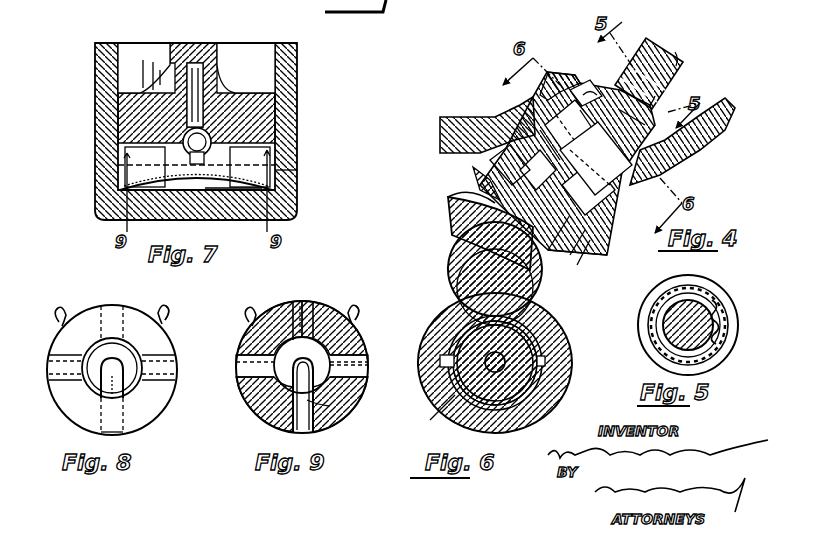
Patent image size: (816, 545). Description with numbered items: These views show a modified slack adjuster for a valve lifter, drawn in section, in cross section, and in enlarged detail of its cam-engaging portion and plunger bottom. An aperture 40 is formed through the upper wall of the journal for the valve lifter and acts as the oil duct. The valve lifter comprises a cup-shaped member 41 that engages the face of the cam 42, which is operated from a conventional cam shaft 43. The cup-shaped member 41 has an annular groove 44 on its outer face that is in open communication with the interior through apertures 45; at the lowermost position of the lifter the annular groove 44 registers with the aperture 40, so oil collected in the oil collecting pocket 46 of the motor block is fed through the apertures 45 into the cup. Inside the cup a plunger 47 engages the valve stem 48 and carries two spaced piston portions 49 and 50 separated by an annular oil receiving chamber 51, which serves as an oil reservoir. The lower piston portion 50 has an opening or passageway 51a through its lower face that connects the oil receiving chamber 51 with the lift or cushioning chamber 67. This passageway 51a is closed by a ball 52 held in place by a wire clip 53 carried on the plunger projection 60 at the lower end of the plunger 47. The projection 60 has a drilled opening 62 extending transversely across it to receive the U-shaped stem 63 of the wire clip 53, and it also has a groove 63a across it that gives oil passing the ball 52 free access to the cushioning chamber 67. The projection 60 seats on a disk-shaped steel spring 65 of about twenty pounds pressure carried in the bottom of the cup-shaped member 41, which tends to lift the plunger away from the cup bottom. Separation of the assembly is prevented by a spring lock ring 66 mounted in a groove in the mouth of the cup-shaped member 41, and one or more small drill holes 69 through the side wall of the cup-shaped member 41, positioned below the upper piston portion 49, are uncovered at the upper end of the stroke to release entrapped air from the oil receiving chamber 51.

In FIG. 4, the aperture 40 is at (523, 62).
In FIG. 6, the aperture 40 is at (444, 357).
In FIG. 7, the cup-shaped member 41 is at (96, 176).
In FIG. 4, the cup-shaped member 41 is at (553, 252).
In FIG. 6, the cup-shaped member 41 is at (460, 318).
In FIG. 5, the cup-shaped member 41 is at (732, 338).
In FIG. 4, the cam 42 is at (445, 198).
In FIG. 4, the cam shaft 43 is at (462, 243).
In FIG. 4, the annular groove 44 is at (600, 215).
In FIG. 6, the annular groove 44 is at (456, 395).
In FIG. 4, the apertures 45 is at (604, 173).
In FIG. 6, the apertures 45 is at (548, 362).
In FIG. 4, the oil collecting pocket 46 is at (500, 103).
In FIG. 4, the plunger 47 is at (638, 114).
In FIG. 4, the valve stem 48 is at (655, 55).
In FIG. 5, the valve stem 48 is at (664, 318).
In FIG. 4, the piston portion 49 is at (560, 73).
In FIG. 5, the piston portion 49 is at (652, 345).
In FIG. 7, the piston portion 50 is at (118, 116).
In FIG. 4, the piston portion 50 is at (478, 177).
In FIG. 6, the piston portion 50 is at (472, 382).
In FIG. 7, the oil receiving chamber 51 is at (253, 50).
In FIG. 4, the oil receiving chamber 51 is at (490, 160).
In FIG. 7, the opening or passageway 51a is at (197, 80).
In FIG. 4, the opening or passageway 51a is at (575, 258).
In FIG. 7, the ball 52 is at (211, 140).
In FIG. 8, the ball 52 is at (140, 385).
In FIG. 9, the ball 52 is at (290, 340).
In FIG. 7, the wire clip 53 is at (250, 189).
In FIG. 4, the wire clip 53 is at (578, 265).
In FIG. 8, the wire clip 53 is at (170, 318).
In FIG. 9, the wire clip 53 is at (360, 322).
In FIG. 7, the plunger projection 60 is at (163, 192).
In FIG. 8, the plunger projection 60 is at (95, 306).
In FIG. 9, the plunger projection 60 is at (325, 304).
In FIG. 7, the drilled opening 62 is at (144, 189).
In FIG. 8, the drilled opening 62 is at (120, 432).
In FIG. 9, the drilled opening 62 is at (303, 426).
In FIG. 9, the U-shaped stem 63 is at (310, 400).
In FIG. 9, the groove 63a is at (350, 372).
In FIG. 7, the disk-shaped steel spring 65 is at (246, 194).
In FIG. 4, the spring lock ring 66 is at (588, 90).
In FIG. 5, the spring lock ring 66 is at (712, 300).
In FIG. 7, the cushioning chamber 67 is at (278, 171).
In FIG. 4, the drill holes 69 is at (688, 170).